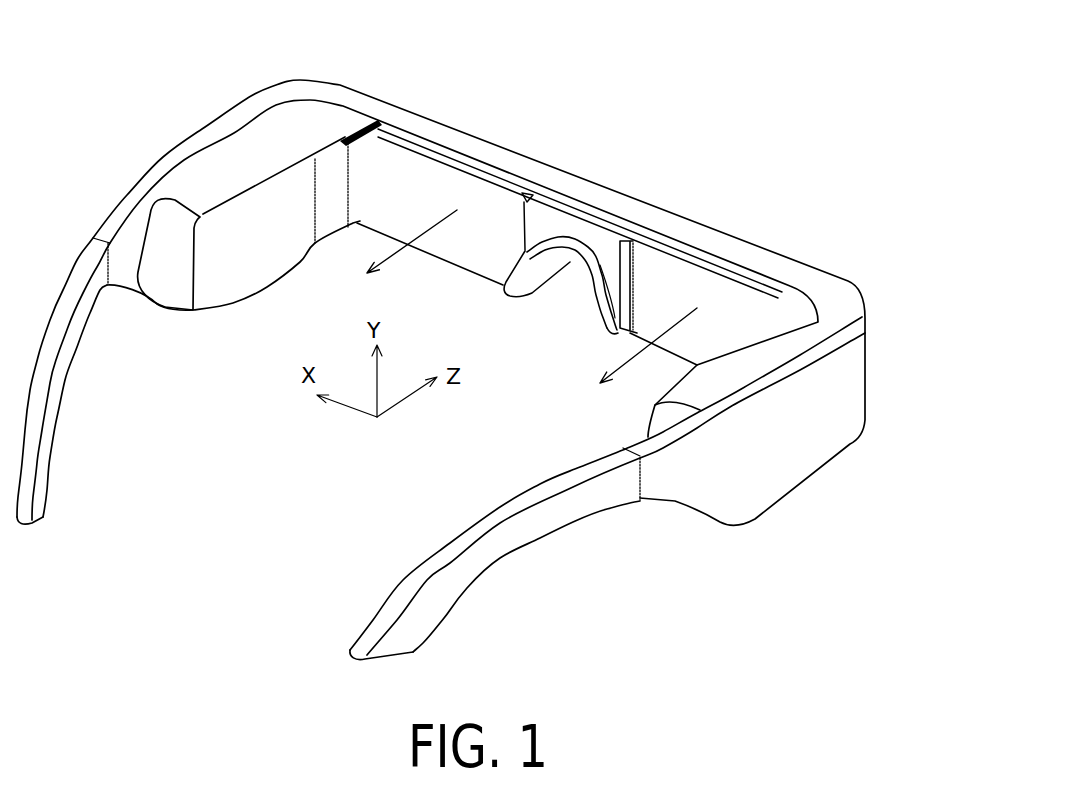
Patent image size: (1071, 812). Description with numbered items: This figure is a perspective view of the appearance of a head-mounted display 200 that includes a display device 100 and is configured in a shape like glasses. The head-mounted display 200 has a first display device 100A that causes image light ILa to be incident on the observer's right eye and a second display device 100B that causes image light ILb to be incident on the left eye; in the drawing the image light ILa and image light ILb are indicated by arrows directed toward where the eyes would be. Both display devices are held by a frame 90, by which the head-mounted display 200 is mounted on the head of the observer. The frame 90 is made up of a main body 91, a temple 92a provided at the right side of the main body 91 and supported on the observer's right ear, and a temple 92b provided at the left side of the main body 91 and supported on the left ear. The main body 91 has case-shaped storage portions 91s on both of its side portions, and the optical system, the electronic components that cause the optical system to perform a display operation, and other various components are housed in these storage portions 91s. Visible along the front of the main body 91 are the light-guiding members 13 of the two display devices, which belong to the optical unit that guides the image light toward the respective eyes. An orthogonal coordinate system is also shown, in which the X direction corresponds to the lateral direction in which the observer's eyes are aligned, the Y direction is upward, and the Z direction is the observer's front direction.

The head-mounted display 200 is at (772, 32).
The frame 90 is at (148, 145).
The main body 91 is at (570, 185).
The storage portions 91s is at (243, 153).
The temple 92a is at (487, 553).
The temple 92b is at (55, 412).
The display device 100 is at (520, 343).
The first display device 100A is at (782, 272).
The second display device 100B is at (323, 128).
The light-guiding member 13 is at (440, 180).
The image light ILa is at (612, 370).
The image light ILb is at (393, 257).